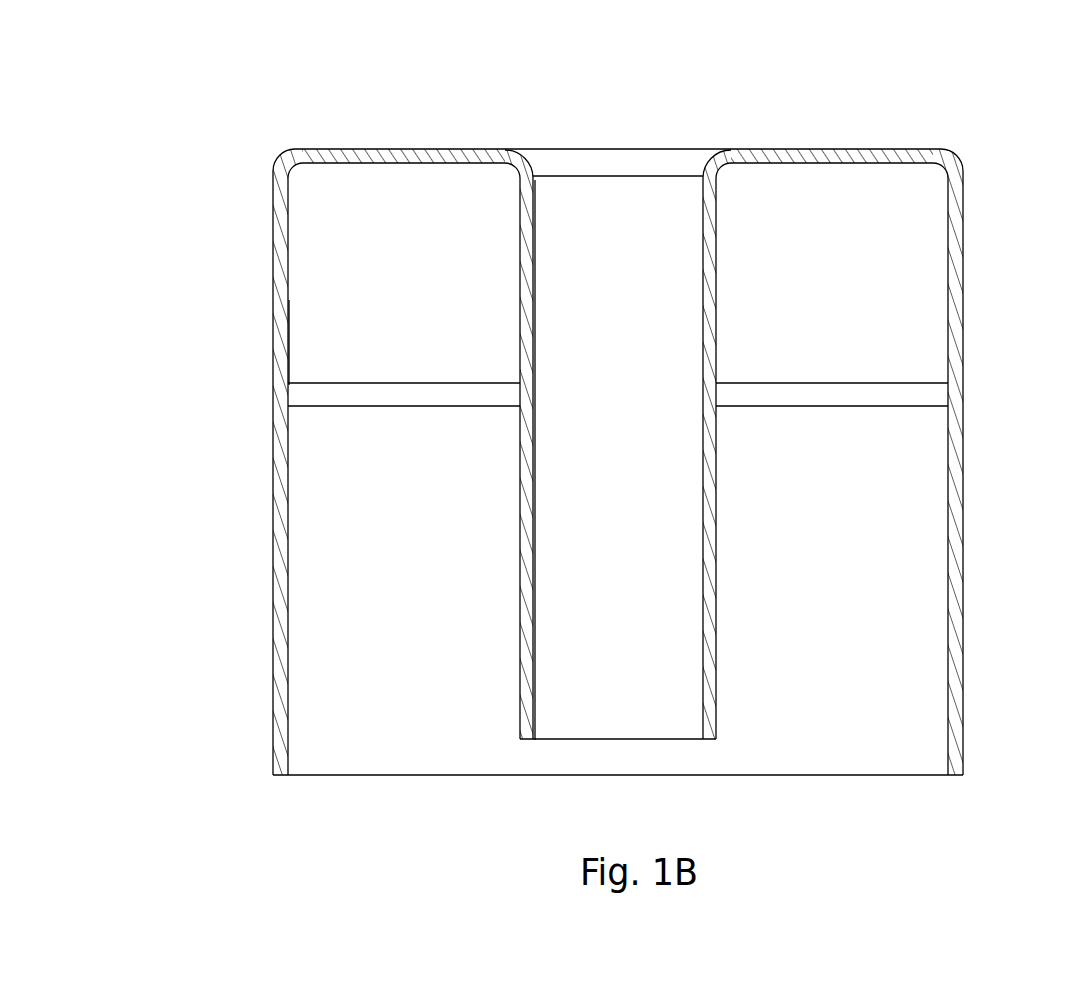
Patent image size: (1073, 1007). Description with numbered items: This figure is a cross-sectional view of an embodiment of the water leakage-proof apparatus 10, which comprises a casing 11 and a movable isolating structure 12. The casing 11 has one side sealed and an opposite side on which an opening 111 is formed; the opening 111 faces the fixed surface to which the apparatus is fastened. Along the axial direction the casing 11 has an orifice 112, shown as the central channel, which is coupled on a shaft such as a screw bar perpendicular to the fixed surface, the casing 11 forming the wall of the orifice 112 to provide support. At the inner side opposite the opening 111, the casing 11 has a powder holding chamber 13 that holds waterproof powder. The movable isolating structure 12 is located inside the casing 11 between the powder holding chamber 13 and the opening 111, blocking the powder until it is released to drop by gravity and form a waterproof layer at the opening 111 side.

The water leakage-proof apparatus 10 is at (612, 423).
The casing 11 is at (955, 253).
The opening 111 is at (953, 775).
The orifice 112 is at (598, 215).
The movable isolating structure 12 is at (323, 393).
The powder holding chamber 13 is at (315, 285).